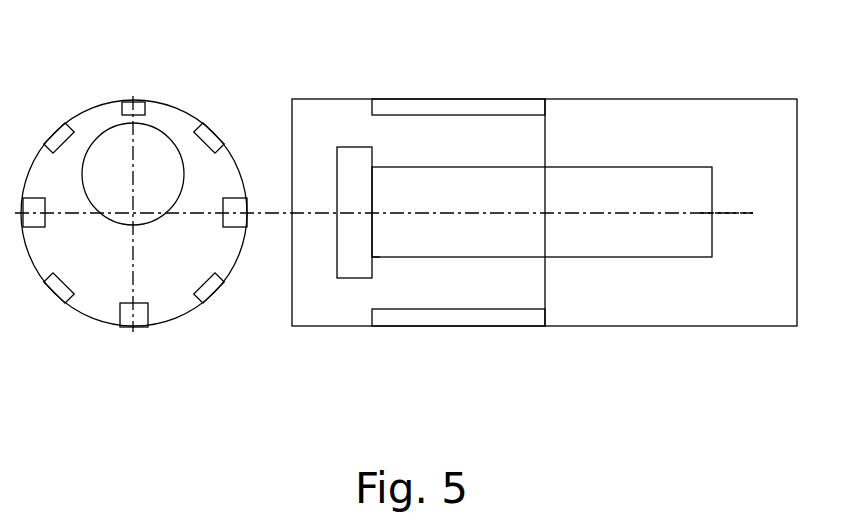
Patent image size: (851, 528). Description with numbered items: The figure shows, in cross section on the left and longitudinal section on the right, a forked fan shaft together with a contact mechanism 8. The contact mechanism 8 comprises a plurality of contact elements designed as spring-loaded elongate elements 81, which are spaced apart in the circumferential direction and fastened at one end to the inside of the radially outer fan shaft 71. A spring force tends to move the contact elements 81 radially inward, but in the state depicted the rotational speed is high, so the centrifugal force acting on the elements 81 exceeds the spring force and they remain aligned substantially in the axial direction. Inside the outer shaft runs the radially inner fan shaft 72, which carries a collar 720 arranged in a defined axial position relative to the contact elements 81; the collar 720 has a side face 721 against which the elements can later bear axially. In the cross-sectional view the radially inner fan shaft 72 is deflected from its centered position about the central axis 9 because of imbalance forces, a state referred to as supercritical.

The radially outer fan shaft 71 is at (157, 100).
The spring-loaded elongate elements 81 is at (207, 133).
The contact mechanism 8 is at (218, 298).
The radially inner fan shaft 72 is at (155, 223).
The collar 720 is at (353, 272).
The side face 721 is at (375, 261).
The central axis 9 is at (733, 213).